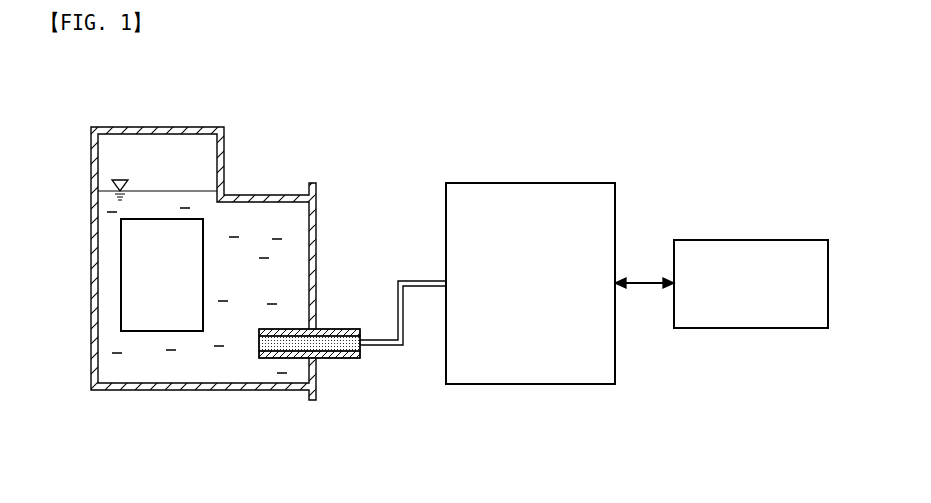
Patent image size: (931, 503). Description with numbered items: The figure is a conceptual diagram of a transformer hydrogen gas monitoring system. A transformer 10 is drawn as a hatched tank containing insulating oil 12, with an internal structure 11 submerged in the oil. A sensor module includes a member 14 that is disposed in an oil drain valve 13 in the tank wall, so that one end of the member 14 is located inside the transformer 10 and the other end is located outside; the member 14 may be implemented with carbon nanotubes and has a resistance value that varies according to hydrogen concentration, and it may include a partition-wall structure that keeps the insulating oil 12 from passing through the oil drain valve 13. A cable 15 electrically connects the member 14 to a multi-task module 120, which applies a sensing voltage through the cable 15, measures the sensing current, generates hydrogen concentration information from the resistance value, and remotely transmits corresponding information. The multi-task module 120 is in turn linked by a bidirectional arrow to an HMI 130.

The transformer 10 is at (156, 122).
The submerged structure 11 is at (121, 255).
The insulating oil 12 is at (207, 363).
The oil drain valve 13 is at (332, 347).
The member 14 is at (332, 347).
The cable 15 is at (417, 280).
The multi-task module 120 is at (568, 182).
The HMI 130 is at (782, 238).